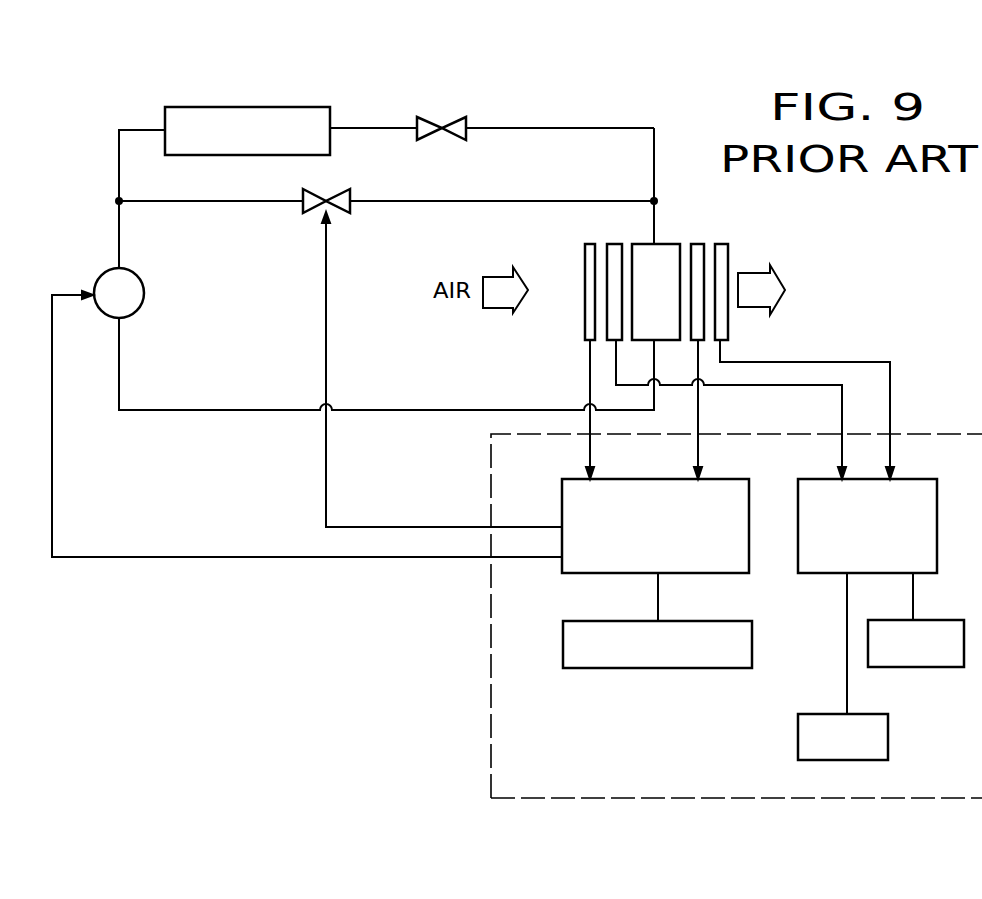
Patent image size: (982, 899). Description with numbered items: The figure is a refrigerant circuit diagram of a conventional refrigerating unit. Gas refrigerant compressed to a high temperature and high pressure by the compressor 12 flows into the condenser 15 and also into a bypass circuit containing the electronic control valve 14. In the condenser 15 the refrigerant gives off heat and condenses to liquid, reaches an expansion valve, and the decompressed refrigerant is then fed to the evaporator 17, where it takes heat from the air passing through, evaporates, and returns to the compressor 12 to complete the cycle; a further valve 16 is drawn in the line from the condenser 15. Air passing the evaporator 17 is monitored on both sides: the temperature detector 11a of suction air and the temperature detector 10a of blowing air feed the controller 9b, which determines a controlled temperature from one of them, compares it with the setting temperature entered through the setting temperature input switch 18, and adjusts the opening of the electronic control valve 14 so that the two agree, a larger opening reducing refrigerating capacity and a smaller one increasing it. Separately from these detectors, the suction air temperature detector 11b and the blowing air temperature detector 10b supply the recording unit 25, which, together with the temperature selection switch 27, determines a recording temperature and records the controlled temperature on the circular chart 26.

The controller 9b is at (731, 479).
The temperature detector of blowing air 10a is at (701, 244).
The blowing air temperature detector 10b is at (721, 244).
The temperature detector of suction air 11a is at (586, 268).
The suction air temperature detector 11b is at (616, 245).
The compressor 12 is at (139, 273).
The electronic control valve 14 is at (338, 189).
The condenser 15 is at (297, 107).
The valve 16 is at (453, 117).
The evaporator 17 is at (667, 244).
The setting temperature input switch 18 is at (714, 668).
The recording unit 25 is at (918, 479).
The circular chart 26 is at (944, 667).
The temperature selection switch 27 is at (888, 752).